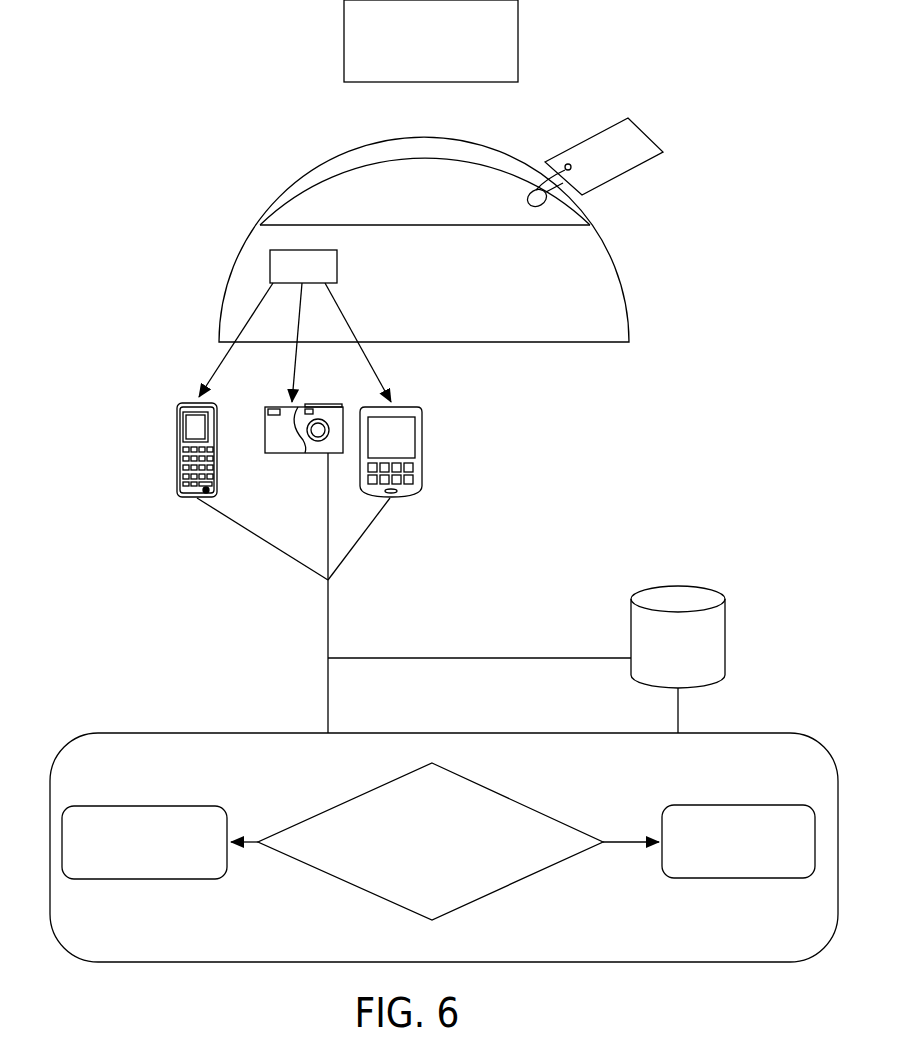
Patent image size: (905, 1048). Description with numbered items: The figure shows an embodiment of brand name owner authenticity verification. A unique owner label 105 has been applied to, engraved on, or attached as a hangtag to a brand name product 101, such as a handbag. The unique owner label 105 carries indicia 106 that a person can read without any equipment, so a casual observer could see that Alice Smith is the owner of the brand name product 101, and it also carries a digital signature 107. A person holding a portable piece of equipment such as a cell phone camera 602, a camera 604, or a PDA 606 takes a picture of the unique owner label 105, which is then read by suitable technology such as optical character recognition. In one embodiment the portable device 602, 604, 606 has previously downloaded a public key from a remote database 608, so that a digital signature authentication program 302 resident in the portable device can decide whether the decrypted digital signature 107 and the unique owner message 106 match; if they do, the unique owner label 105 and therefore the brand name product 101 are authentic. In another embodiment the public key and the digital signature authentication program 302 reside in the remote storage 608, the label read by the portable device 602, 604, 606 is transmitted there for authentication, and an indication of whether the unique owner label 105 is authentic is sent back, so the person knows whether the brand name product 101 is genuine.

The brand name product 101 is at (623, 312).
The unique owner label 105 is at (467, 141).
The indicia 106 is at (350, 22).
The digital signature 107 is at (392, 60).
The digital signature authentication program 302 is at (215, 733).
The cell phone camera 602 is at (177, 470).
The camera 604 is at (305, 453).
The PDA 606 is at (422, 452).
The database 608 is at (703, 598).